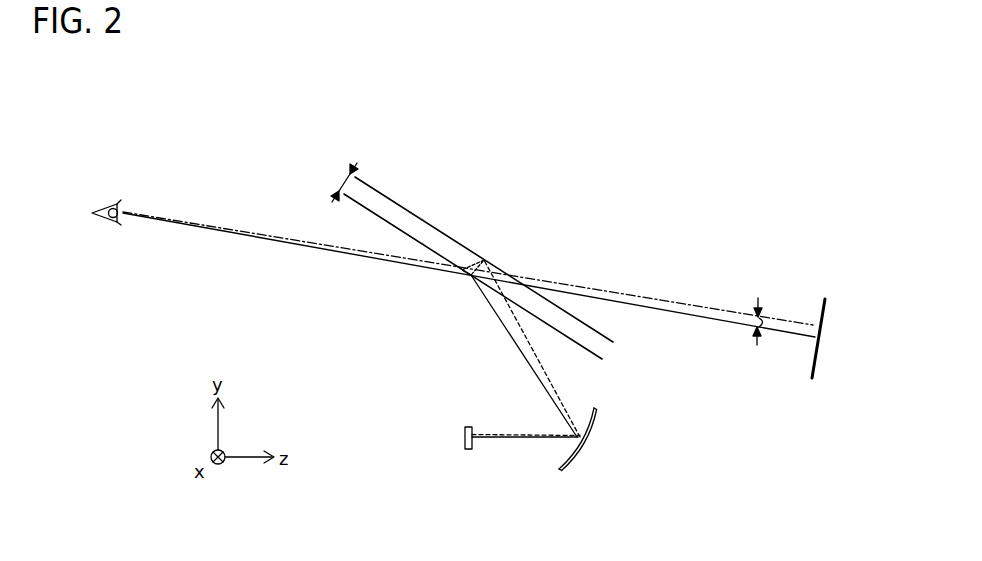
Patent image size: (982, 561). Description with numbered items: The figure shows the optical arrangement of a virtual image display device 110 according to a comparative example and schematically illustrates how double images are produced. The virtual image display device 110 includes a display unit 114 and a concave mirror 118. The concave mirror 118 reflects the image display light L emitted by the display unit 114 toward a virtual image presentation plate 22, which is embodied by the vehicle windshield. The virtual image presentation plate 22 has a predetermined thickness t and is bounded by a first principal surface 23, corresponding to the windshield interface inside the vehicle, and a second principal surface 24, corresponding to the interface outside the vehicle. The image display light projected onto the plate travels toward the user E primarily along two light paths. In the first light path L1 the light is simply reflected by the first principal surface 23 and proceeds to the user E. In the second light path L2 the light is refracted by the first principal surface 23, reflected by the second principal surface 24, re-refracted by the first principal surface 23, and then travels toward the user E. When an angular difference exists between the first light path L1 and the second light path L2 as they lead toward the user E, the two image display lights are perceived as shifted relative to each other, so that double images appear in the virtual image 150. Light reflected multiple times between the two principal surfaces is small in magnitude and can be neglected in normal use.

The virtual image presentation plate 22 is at (452, 236).
The first principal surface 23 is at (362, 208).
The second principal surface 24 is at (399, 205).
The virtual image display device 110 is at (520, 400).
The display unit 114 is at (468, 425).
The concave mirror 118 is at (572, 458).
The virtual image 150 is at (827, 278).
The user E is at (106, 203).
The image display light L is at (518, 447).
The first light path L1 is at (427, 268).
The second light path L2 is at (393, 256).
The thickness t is at (344, 181).